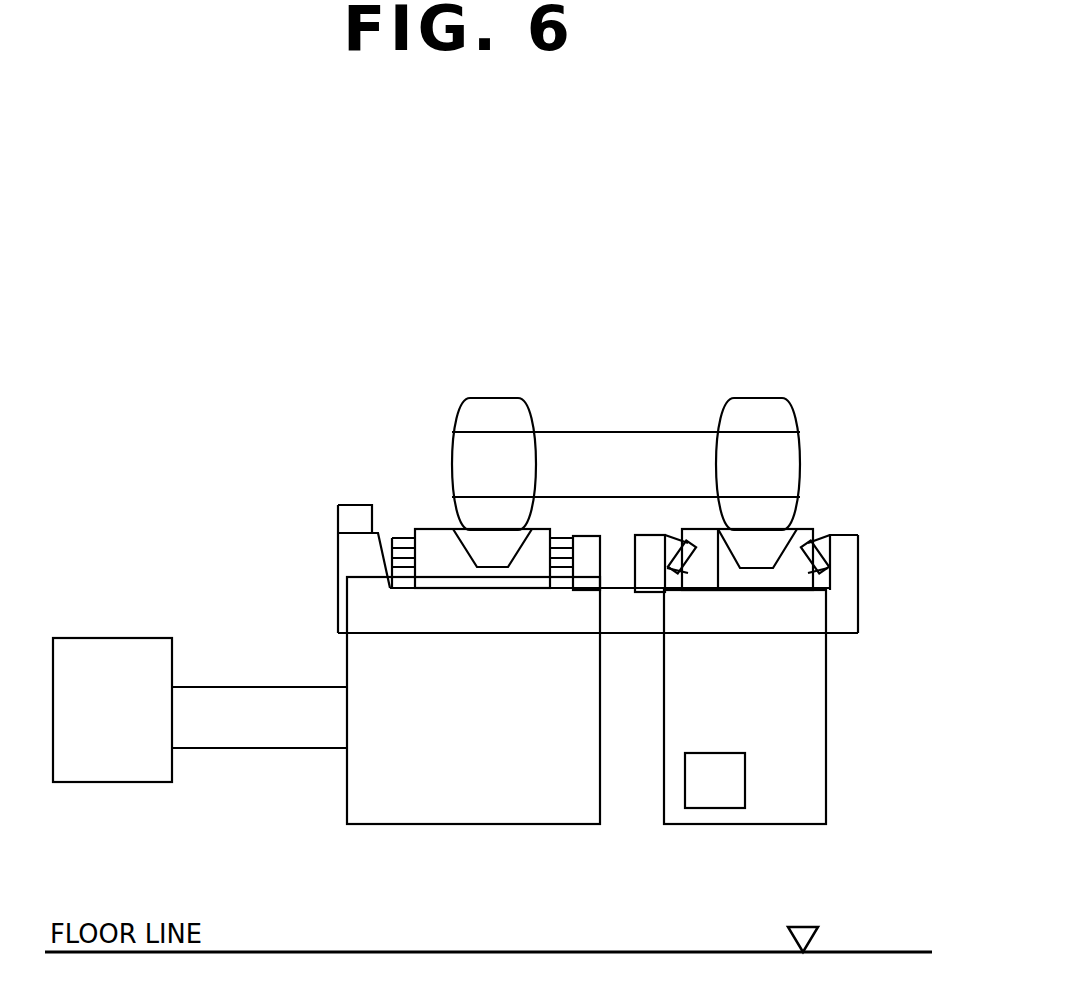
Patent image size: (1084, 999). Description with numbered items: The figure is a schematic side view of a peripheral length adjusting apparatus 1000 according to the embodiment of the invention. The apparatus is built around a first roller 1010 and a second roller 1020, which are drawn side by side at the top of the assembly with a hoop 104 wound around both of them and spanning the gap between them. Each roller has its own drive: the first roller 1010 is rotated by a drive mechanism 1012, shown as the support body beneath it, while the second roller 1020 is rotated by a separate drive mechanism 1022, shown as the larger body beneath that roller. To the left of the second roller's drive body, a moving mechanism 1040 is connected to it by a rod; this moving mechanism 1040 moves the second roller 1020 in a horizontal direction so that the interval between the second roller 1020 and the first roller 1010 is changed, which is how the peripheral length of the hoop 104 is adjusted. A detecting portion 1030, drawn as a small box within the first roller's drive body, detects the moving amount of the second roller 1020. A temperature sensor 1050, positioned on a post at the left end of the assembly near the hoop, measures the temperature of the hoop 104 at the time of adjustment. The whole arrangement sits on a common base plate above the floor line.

The peripheral length adjusting apparatus 1000 is at (233, 370).
The second roller 1020 is at (485, 398).
The first roller 1010 is at (748, 398).
The hoop 104 is at (593, 438).
The temperature sensor 1050 is at (348, 517).
The drive mechanism for the second roller 1022 is at (533, 747).
The drive mechanism for the first roller 1012 is at (772, 685).
The detecting portion 1030 is at (718, 797).
The moving mechanism for the second roller 1040 is at (113, 770).